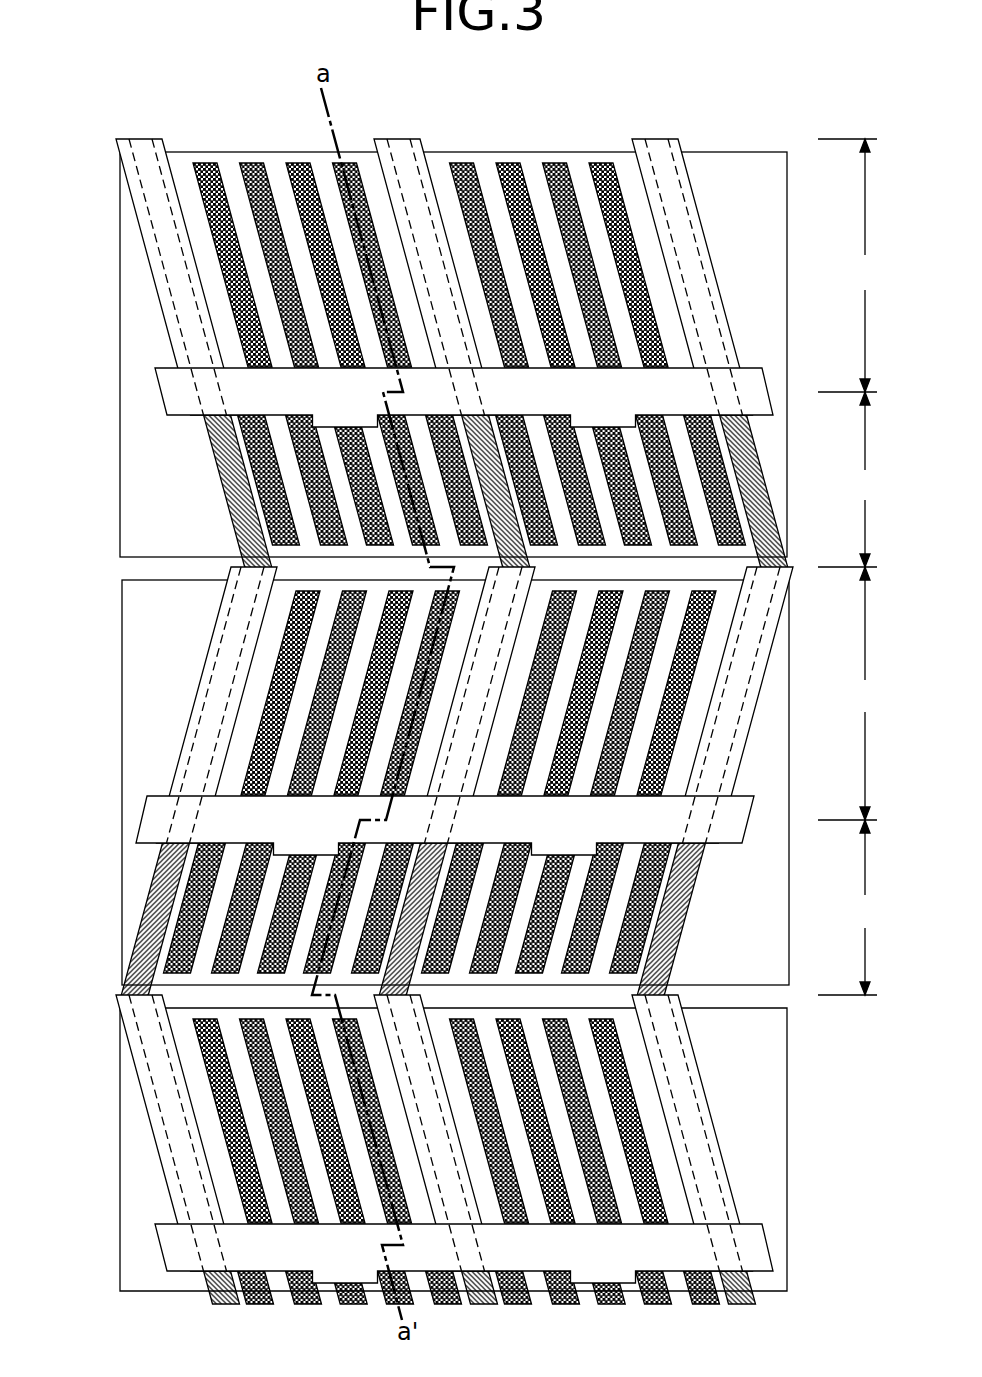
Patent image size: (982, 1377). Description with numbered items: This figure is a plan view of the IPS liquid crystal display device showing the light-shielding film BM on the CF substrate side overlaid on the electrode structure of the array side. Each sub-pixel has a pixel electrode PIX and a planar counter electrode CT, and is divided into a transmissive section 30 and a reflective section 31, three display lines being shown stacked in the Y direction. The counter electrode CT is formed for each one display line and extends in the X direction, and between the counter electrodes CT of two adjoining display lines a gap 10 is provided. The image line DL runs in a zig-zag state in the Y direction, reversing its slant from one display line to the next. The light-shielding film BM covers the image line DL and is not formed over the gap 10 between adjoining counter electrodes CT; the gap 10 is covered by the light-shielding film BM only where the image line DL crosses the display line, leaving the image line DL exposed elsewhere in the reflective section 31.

The light-shielding film BM is at (658, 152).
The image line DL is at (222, 468).
The pixel electrode PIX is at (268, 717).
The counter electrode CT is at (135, 785).
The gap 10 is at (105, 559).
The transmissive section 30 is at (848, 479).
The reflective section 31 is at (848, 693).